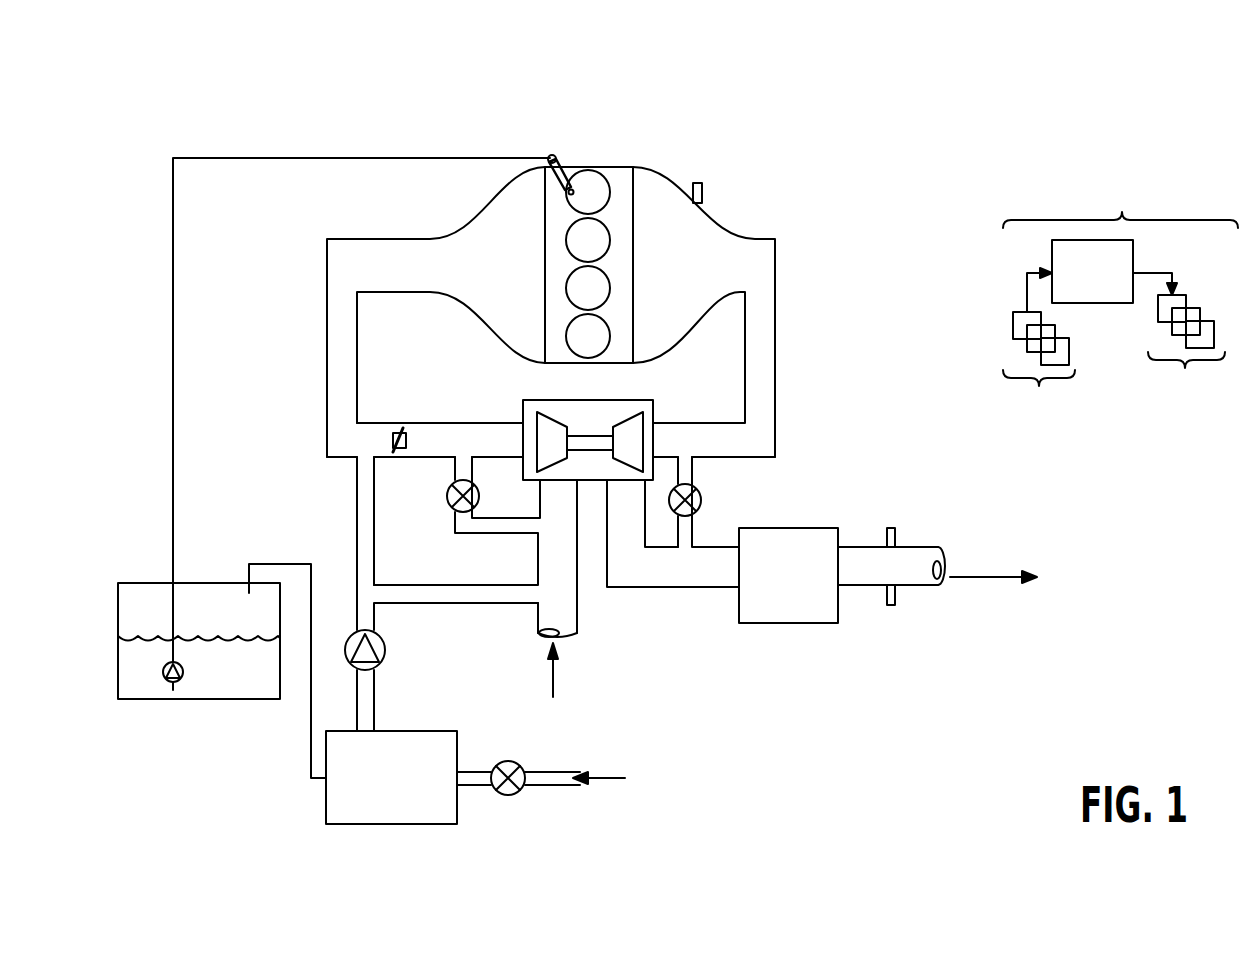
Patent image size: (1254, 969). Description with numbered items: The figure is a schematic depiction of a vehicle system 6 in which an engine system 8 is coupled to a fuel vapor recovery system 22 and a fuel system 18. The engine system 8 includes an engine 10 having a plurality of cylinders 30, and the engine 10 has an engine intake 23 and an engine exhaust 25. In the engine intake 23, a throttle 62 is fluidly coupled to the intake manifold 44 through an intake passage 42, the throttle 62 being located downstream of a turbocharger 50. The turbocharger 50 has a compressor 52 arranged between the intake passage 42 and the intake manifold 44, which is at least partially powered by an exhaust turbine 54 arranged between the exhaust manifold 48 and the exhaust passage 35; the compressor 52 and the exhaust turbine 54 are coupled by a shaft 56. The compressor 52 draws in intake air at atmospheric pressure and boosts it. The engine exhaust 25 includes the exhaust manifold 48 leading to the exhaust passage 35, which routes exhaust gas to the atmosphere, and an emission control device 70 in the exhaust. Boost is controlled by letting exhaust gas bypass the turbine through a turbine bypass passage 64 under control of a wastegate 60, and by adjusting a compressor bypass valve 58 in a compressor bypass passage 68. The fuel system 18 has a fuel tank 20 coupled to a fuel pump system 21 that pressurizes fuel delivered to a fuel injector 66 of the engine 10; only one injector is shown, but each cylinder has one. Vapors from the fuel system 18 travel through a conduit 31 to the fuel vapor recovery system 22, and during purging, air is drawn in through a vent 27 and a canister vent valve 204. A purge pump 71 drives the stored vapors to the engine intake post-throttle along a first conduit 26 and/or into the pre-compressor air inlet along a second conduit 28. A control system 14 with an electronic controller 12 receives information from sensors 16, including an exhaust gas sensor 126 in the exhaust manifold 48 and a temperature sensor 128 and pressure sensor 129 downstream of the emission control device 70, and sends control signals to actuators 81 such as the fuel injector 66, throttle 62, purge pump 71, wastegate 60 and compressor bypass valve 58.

The vehicle system 6 is at (150, 130).
The engine system 8 is at (676, 150).
The engine 10 is at (633, 247).
The controller 12 is at (1092, 271).
The control system 14 is at (1120, 199).
The sensors 16 is at (1039, 346).
The fuel system 18 is at (205, 535).
The fuel tank 20 is at (118, 583).
The fuel pump system 21 is at (183, 672).
The fuel vapor recovery system 22 is at (400, 731).
The engine intake 23 is at (296, 258).
The engine exhaust 25 is at (800, 368).
The first conduit 26 is at (374, 492).
The vent 27 is at (560, 772).
The second conduit 28 is at (488, 585).
The cylinders 30 is at (600, 182).
The conduit 31 is at (290, 564).
The exhaust passage 35 is at (905, 546).
The intake passage 42 is at (578, 618).
The intake manifold 44 is at (425, 356).
The exhaust manifold 48 is at (714, 356).
The turbocharger 50 is at (585, 399).
The compressor 52 is at (537, 428).
The exhaust turbine 54 is at (643, 428).
The shaft 56 is at (577, 436).
The compressor bypass valve 58 is at (478, 490).
The wastegate 60 is at (700, 494).
The throttle 62 is at (406, 443).
The turbine bypass passage 64 is at (692, 528).
The fuel injector 66 is at (567, 171).
The compressor bypass passage 68 is at (496, 516).
The emission control device 70 is at (776, 528).
The purge pump 71 is at (385, 644).
The actuators 81 is at (1179, 340).
The exhaust gas sensor 126 is at (702, 200).
The temperature sensor 128 is at (896, 598).
The pressure sensor 129 is at (891, 528).
The canister vent valve 204 is at (507, 761).